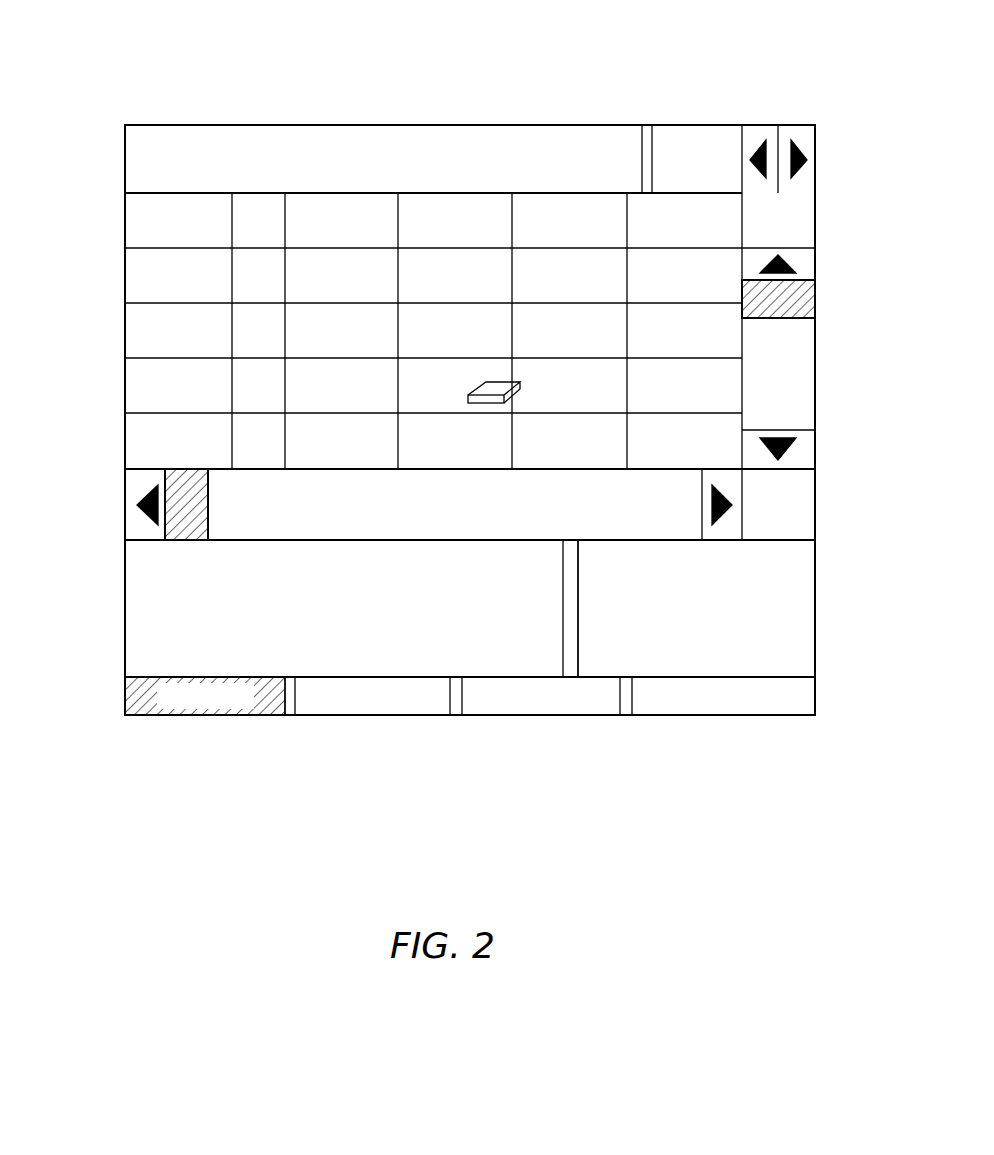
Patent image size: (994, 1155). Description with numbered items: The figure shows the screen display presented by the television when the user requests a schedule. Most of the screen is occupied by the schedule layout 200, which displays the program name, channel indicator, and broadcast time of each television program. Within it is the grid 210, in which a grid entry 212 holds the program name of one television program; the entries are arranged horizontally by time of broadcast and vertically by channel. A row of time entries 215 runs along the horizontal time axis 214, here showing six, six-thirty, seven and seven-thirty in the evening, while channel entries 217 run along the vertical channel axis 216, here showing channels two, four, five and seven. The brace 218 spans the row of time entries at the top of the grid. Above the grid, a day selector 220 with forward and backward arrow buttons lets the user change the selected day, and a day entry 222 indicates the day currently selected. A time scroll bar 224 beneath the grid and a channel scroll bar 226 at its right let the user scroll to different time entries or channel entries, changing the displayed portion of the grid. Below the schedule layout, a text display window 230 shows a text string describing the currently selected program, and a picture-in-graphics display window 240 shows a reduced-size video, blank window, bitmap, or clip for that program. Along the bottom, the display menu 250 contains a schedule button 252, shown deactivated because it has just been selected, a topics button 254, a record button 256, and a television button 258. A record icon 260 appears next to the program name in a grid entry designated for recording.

The schedule layout 200 is at (826, 125).
The grid 210 is at (734, 472).
The grid entry 212 is at (418, 423).
The horizontal time axis 214 is at (283, 63).
The time entries 215 is at (636, 196).
The vertical channel axis 216 is at (70, 473).
The channel entries 217 is at (283, 190).
The time header row 218 is at (322, 193).
The day selector 220 is at (815, 118).
The day entry 222 is at (680, 130).
The time scroll bar 224 is at (281, 518).
The channel scroll bar 226 is at (758, 392).
The text display window 230 is at (135, 620).
The picture-in-graphics display window 240 is at (790, 582).
The display menu 250 is at (115, 679).
The schedule button 252 is at (255, 716).
The topics button 254 is at (426, 718).
The record button 256 is at (588, 716).
The television button 258 is at (654, 716).
The record icon 260 is at (510, 383).